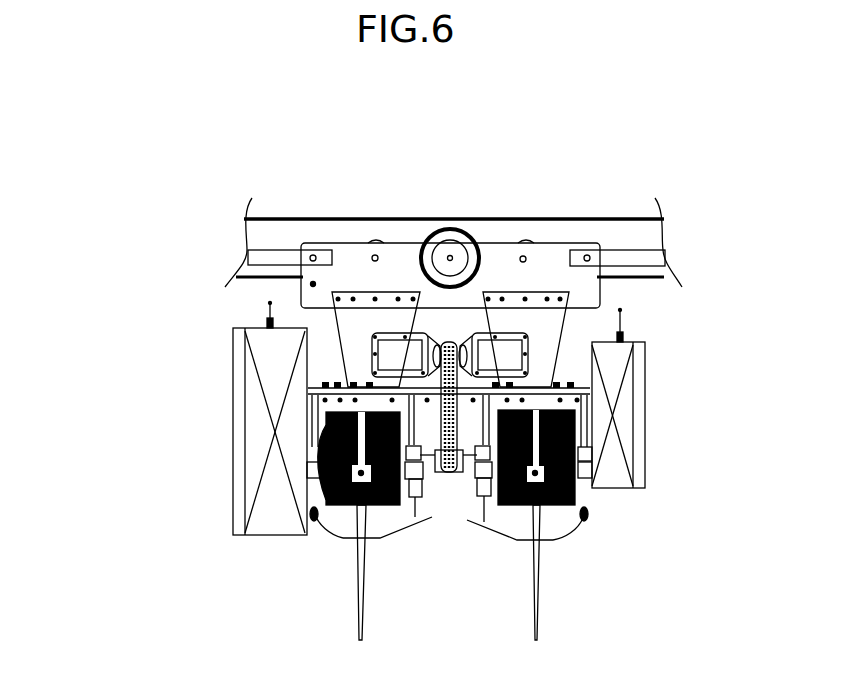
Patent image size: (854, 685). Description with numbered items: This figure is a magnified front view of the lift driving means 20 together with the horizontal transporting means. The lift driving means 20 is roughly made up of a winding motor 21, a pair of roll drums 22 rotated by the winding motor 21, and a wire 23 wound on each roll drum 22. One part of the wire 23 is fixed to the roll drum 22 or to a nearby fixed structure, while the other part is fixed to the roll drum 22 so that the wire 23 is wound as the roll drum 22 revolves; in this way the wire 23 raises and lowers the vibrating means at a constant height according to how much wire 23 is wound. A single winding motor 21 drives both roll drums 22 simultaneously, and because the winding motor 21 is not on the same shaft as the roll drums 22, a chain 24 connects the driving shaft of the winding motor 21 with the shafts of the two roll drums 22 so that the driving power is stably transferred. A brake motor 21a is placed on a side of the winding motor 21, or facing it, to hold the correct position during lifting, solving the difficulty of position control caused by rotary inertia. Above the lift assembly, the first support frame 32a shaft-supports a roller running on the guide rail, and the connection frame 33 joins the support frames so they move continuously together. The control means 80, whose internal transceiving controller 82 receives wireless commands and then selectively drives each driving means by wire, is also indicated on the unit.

The lift driving means 20 is at (670, 402).
The winding motor 21 is at (415, 358).
The brake motor 21a is at (480, 363).
The roll drum 22 is at (330, 520).
The wire 23 is at (358, 600).
The chain 24 is at (467, 520).
The first support frame 32a is at (400, 255).
The connection frame 33 is at (270, 253).
The control means 80 is at (425, 419).
The internal transceiving controller 82 is at (217, 430).